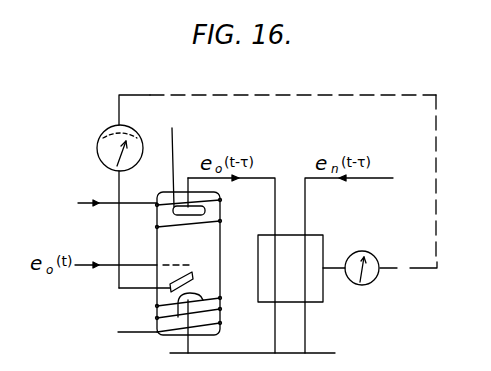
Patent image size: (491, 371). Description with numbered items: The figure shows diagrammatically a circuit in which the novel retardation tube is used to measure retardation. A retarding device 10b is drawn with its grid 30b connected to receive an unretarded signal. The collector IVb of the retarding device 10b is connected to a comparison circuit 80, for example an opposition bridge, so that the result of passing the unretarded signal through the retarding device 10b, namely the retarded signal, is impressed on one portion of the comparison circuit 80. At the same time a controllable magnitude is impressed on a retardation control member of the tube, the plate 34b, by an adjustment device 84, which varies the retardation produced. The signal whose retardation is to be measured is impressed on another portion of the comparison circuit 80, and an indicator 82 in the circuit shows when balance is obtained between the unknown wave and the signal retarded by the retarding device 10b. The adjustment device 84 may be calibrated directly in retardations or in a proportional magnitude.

The adjustment device 84 is at (97, 150).
The collector IVb is at (183, 162).
The retarding device 10b is at (157, 296).
The grid 30b is at (193, 266).
The plate 34b is at (193, 275).
The comparison circuit 80 is at (312, 295).
The indicator 82 is at (373, 254).